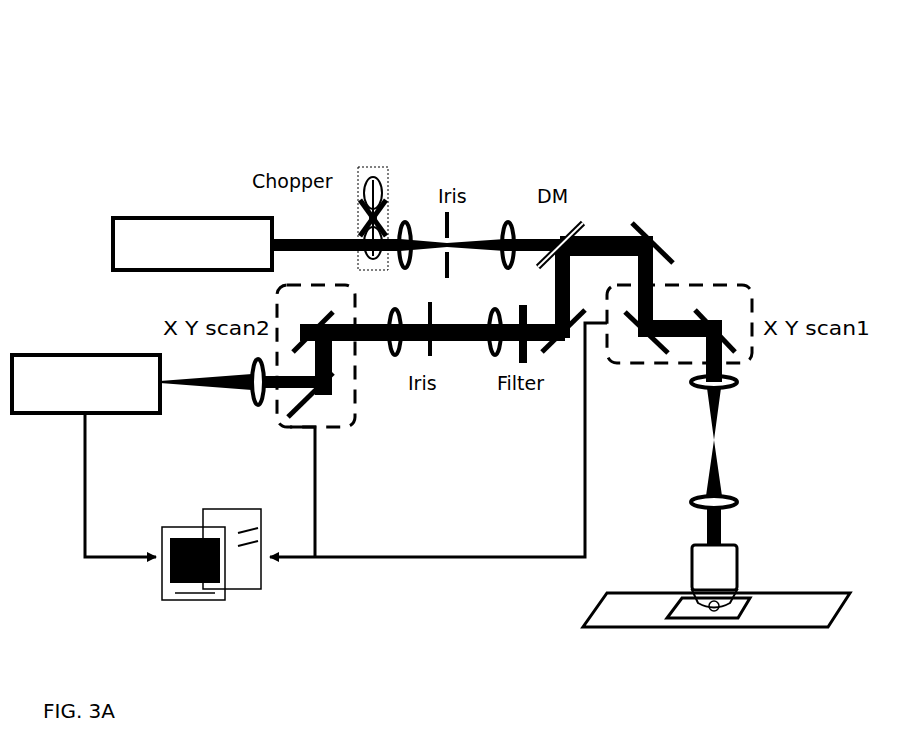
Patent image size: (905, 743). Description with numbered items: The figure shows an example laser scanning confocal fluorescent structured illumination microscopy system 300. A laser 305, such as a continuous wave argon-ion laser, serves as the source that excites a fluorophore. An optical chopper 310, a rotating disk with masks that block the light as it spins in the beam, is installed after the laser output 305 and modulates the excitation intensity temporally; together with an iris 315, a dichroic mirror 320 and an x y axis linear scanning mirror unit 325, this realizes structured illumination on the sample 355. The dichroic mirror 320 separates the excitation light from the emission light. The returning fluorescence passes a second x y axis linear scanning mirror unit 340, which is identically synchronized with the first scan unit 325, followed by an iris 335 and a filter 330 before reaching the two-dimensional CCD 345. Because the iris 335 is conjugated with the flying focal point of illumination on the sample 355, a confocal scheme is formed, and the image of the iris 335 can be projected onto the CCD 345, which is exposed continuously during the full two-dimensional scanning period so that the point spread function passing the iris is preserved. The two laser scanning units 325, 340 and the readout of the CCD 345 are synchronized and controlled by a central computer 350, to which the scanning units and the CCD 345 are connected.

The laser scanning confocal fluorescent SIM system 300 is at (190, 92).
The laser 305 is at (192, 262).
The optical chopper 310 is at (394, 232).
The iris 315 is at (432, 215).
The dichroic mirror 320 is at (570, 213).
The x y axis linear scanning mirror unit 325 is at (710, 341).
The filter 330 is at (549, 357).
The iris 335 is at (449, 356).
The x y axis linear scanning mirror unit 340 is at (334, 379).
The two-dimensional CCD 345 is at (138, 405).
The central computer 350 is at (224, 568).
The sample 355 is at (716, 630).